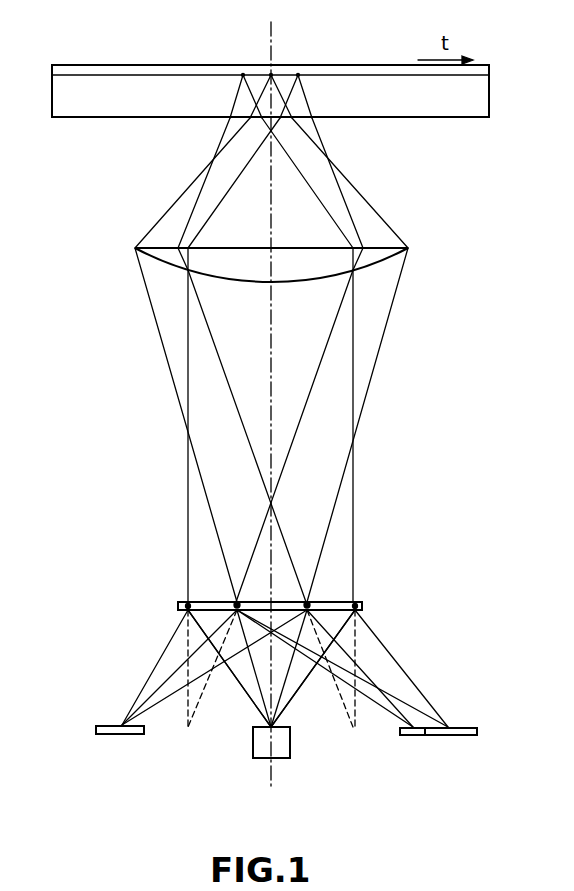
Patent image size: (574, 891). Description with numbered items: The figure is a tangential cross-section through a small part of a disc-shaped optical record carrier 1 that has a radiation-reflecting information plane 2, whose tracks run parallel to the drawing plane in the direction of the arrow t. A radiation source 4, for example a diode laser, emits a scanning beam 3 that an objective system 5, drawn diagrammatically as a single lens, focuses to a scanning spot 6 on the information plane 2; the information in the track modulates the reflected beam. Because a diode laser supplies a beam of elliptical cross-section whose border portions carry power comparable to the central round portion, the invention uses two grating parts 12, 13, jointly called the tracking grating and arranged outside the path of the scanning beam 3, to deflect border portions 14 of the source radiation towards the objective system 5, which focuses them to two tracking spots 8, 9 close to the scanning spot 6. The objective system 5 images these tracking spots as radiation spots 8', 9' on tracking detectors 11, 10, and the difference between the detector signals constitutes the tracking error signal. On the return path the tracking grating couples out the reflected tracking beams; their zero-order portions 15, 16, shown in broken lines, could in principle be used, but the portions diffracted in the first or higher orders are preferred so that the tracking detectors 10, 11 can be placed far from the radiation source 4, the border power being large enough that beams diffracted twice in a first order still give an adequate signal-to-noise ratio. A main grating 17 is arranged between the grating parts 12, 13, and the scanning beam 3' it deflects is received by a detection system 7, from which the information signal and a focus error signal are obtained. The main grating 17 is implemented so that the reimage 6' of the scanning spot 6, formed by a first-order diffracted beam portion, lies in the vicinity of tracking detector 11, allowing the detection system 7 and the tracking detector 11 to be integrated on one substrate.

The optical record carrier 1 is at (478, 103).
The information plane 2 is at (481, 73).
The objective system 5 is at (160, 254).
The scanning spot 6 is at (274, 74).
The tracking spot 8 is at (239, 74).
The tracking spot 9 is at (310, 74).
The main grating 17 is at (287, 602).
The grating part 12 is at (203, 602).
The grating part 13 is at (335, 602).
The scanning beam 3 is at (271, 681).
The border portions of the source radiation 14 is at (238, 657).
The deflected scanning beam 3' is at (349, 668).
The zero-order portion of reflected tracking beam 15 is at (188, 728).
The zero-order portion of reflected tracking beam 16 is at (352, 728).
The radiation source 4 is at (264, 758).
The tracking detector 10 is at (136, 735).
The radiation spot 9' is at (100, 729).
The detection system 7 is at (467, 736).
The tracking detector 11 is at (415, 736).
The radiation spot 8' is at (397, 743).
The reimage of the scanning spot 6' is at (474, 730).